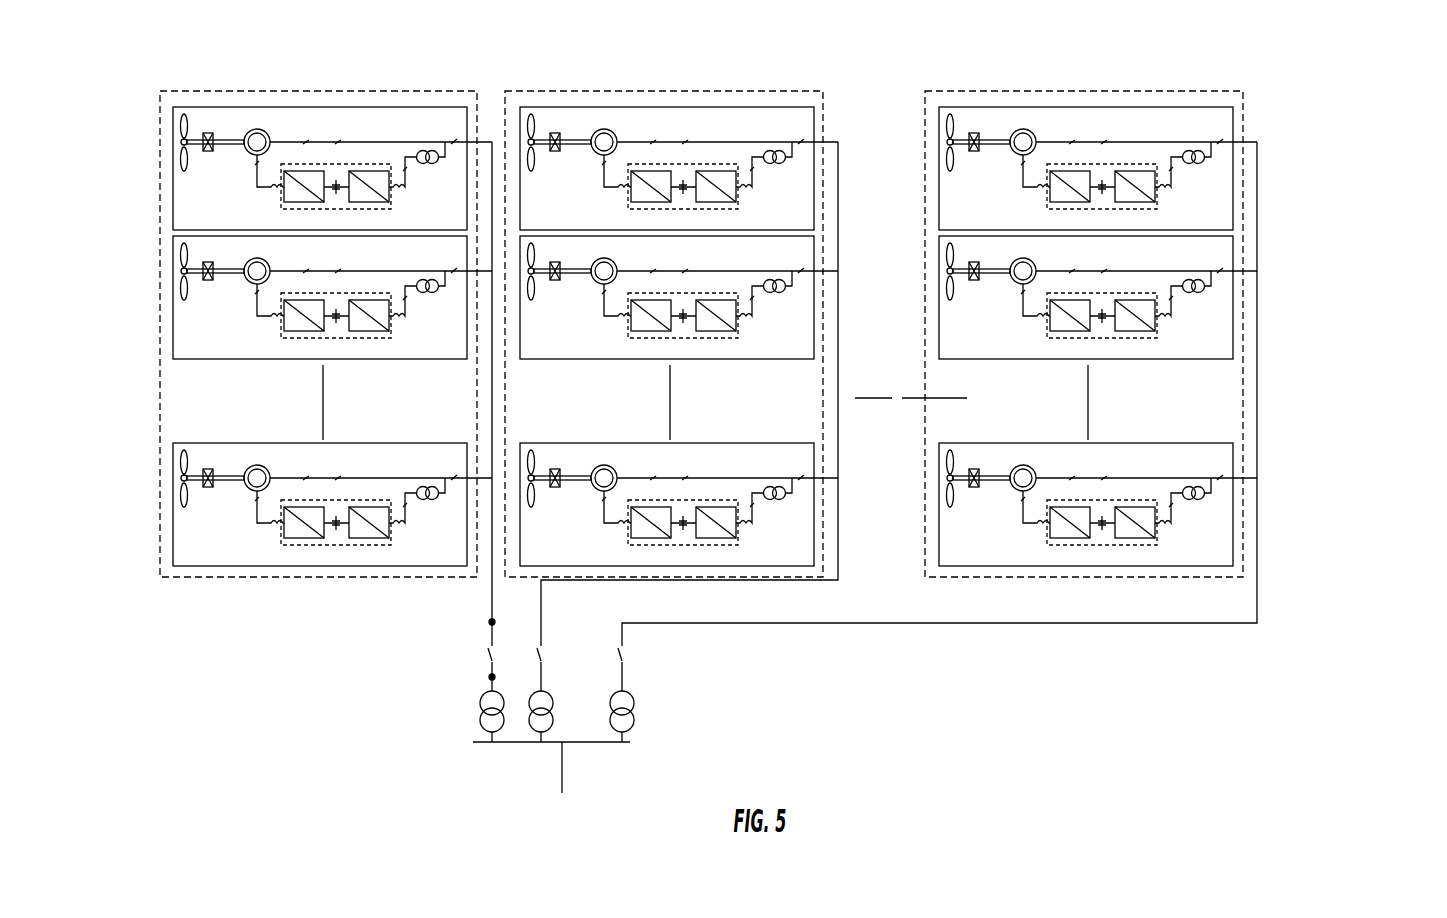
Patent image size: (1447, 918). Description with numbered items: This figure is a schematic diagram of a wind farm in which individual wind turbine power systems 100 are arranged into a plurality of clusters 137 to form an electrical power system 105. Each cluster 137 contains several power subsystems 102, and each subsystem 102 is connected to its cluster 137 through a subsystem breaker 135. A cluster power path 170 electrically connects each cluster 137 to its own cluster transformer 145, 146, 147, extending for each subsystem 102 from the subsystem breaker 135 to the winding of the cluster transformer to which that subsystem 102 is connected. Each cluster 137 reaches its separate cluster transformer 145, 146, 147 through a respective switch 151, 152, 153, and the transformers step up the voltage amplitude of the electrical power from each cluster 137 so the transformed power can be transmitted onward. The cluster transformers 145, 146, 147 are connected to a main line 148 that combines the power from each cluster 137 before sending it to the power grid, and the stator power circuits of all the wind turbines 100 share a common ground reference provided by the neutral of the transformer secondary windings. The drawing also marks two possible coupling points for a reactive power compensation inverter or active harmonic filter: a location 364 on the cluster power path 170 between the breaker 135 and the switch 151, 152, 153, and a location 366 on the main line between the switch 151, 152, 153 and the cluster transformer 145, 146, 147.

The wind turbine power system 100 is at (198, 125).
The power subsystem 102 is at (174, 185).
The electrical power system 105 is at (1347, 178).
The subsystem breaker 135 is at (462, 125).
The cluster 137 is at (160, 253).
The cluster transformer 145 is at (480, 702).
The cluster transformer 146 is at (544, 697).
The cluster transformer 147 is at (631, 698).
The main line 148 is at (508, 742).
The switch 151 is at (476, 650).
The switch 152 is at (529, 646).
The switch 153 is at (614, 659).
The cluster power path 170 is at (490, 396).
The location 364 is at (488, 622).
The location 366 is at (488, 677).